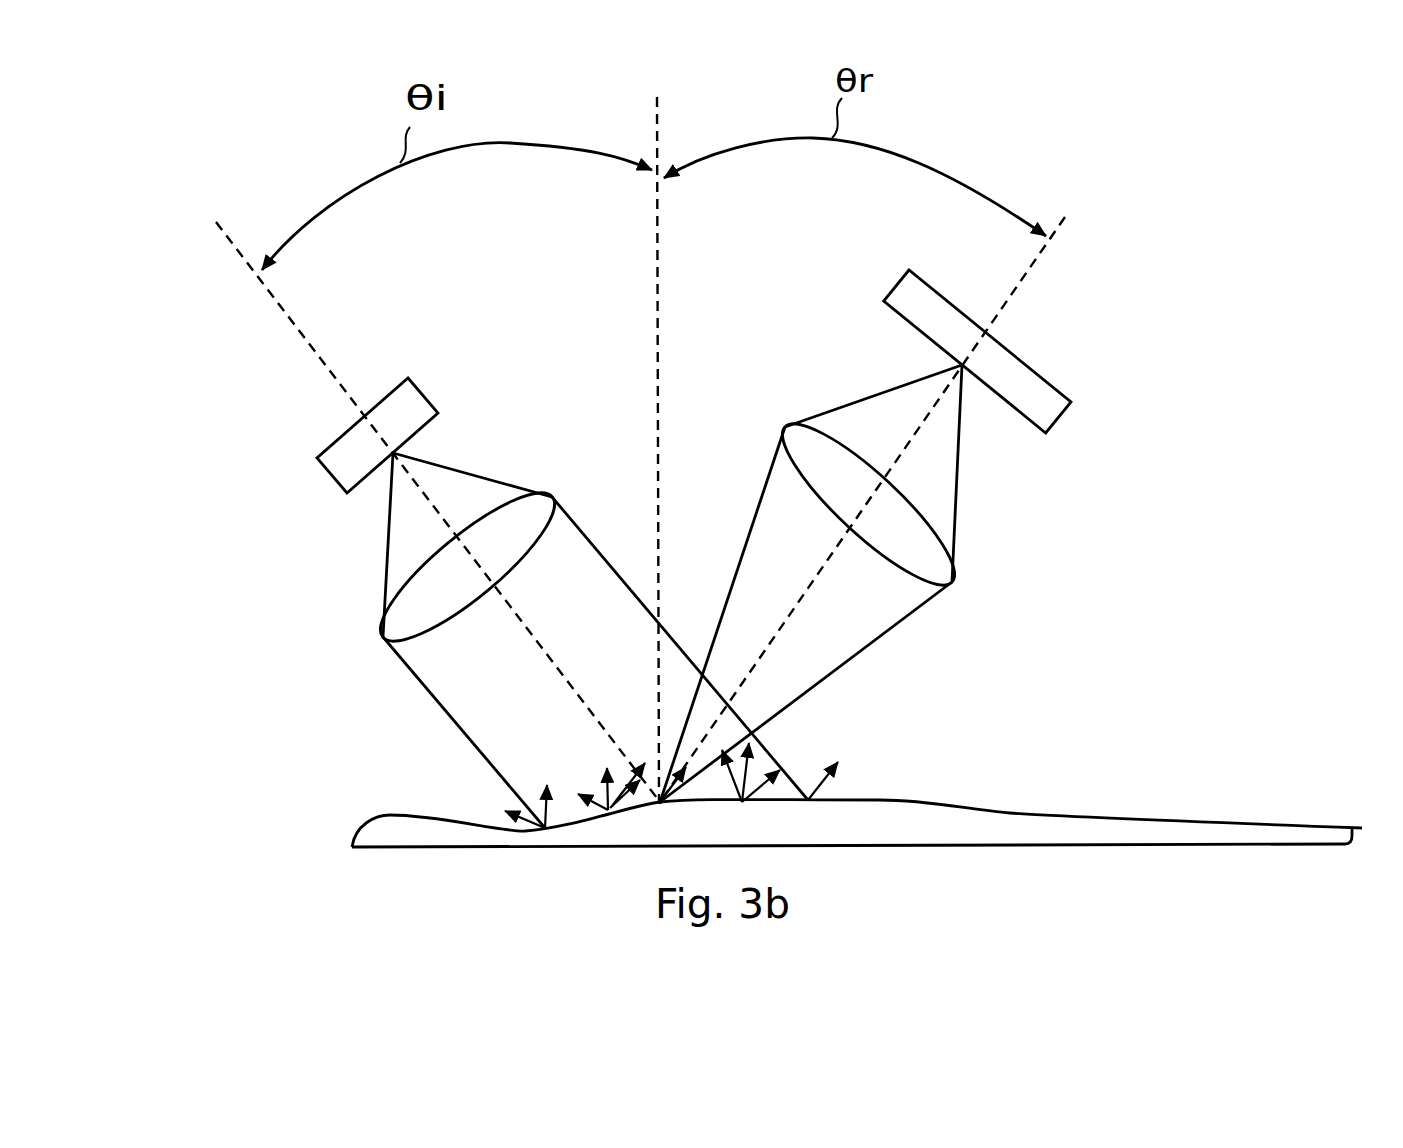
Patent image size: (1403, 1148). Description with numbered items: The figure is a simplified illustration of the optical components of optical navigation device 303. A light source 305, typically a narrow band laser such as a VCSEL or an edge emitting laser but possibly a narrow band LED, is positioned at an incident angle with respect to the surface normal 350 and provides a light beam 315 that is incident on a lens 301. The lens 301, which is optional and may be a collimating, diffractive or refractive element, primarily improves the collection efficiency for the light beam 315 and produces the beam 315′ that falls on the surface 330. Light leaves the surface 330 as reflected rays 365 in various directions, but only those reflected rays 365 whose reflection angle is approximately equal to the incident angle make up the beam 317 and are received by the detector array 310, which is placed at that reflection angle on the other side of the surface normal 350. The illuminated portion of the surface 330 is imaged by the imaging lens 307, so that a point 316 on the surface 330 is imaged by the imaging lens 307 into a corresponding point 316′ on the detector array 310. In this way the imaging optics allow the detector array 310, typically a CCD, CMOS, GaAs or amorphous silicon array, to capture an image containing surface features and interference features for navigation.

The optical navigation device 303 is at (1036, 124).
The surface normal 350 is at (659, 97).
The light source 305 is at (390, 402).
The light beam 315 is at (380, 568).
The lens 301 is at (552, 497).
The beam 315′ is at (440, 712).
The point on surface 316 is at (660, 802).
The beam 317 is at (912, 614).
The imaging lens 307 is at (780, 430).
The point on detector array 316′ is at (955, 368).
The detector array 310 is at (1043, 385).
The surface 330 is at (1275, 830).
The reflected rays 365 is at (842, 754).